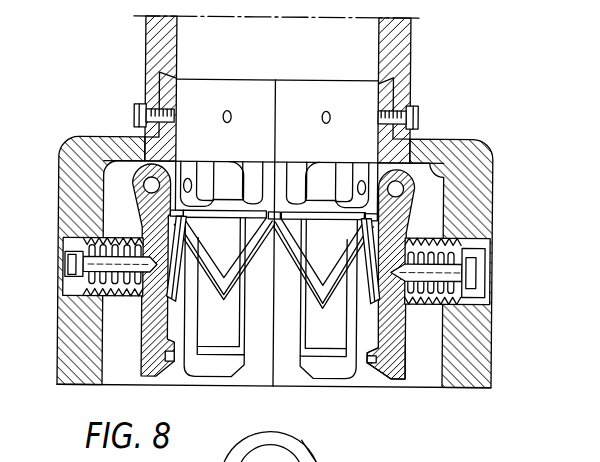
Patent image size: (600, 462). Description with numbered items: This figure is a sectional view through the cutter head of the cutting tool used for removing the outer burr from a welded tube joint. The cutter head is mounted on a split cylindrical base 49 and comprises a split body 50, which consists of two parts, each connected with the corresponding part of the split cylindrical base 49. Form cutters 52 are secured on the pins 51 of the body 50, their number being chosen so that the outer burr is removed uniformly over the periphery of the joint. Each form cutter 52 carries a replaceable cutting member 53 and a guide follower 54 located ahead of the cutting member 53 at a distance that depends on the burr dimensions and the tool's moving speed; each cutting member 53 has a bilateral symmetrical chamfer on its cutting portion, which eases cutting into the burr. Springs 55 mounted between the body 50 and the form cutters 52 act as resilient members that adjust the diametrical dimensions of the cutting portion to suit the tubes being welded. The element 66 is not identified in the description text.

The split cylindrical base 49 is at (398, 44).
The split body 50 is at (480, 177).
The pin 51 is at (396, 185).
The form cutter 52 is at (407, 214).
The replaceable cutting member 53 is at (173, 301).
The guide follower 54 is at (392, 379).
The spring 55 is at (409, 290).
The roller 66 is at (316, 459).